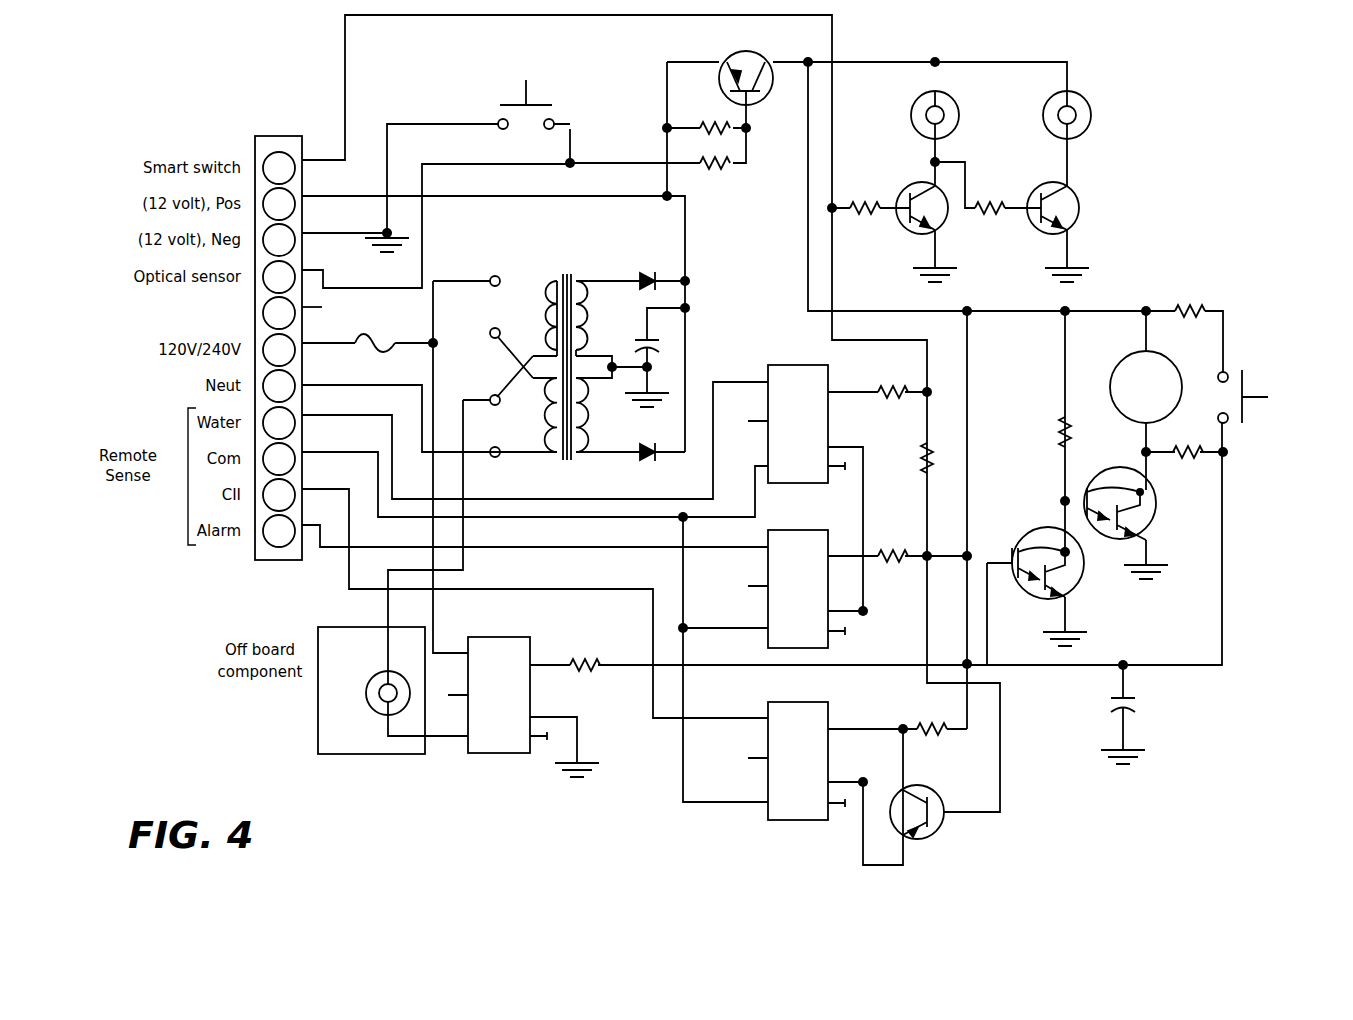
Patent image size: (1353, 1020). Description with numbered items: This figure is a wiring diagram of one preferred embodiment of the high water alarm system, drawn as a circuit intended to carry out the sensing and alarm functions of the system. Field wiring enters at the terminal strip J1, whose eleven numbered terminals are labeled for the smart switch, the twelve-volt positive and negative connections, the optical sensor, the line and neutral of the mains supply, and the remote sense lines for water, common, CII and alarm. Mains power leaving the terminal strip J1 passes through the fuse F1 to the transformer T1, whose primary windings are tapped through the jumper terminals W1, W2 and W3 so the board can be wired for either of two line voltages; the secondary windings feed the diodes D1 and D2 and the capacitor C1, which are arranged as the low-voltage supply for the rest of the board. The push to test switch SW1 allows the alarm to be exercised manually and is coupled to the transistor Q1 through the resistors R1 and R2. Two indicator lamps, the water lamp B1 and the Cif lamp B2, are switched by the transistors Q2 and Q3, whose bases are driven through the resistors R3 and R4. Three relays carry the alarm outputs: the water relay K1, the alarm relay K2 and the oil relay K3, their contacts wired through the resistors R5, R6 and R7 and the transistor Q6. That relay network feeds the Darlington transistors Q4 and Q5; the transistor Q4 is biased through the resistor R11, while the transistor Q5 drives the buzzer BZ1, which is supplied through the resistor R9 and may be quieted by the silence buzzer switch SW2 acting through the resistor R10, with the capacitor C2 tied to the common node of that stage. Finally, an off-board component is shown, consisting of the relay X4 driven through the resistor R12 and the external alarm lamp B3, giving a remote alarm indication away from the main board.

The terminal strip J1 is at (278, 312).
The fuse F1 is at (375, 334).
The push to test switch SW1 is at (519, 79).
The transistor Q1 is at (736, 66).
The resistor R1 is at (715, 115).
The resistor R2 is at (715, 175).
The water indicator lamp B1 is at (955, 105).
The Cif indicator lamp B2 is at (1080, 105).
The transistor Q2 is at (917, 196).
The transistor Q3 is at (1048, 196).
The resistor R3 is at (865, 196).
The resistor R4 is at (990, 196).
The transformer T1 is at (552, 357).
The jumper terminal W1 is at (486, 297).
The jumper terminal W2 is at (486, 353).
The jumper terminal W3 is at (486, 426).
The diode D1 is at (648, 269).
The diode D2 is at (647, 465).
The capacitor C1 is at (642, 334).
The water relay K1 is at (796, 414).
The alarm relay K2 is at (796, 579).
The oil relay K3 is at (796, 751).
The resistor R5 is at (893, 380).
The resistor R6 is at (910, 457).
The resistor R7 is at (912, 631).
The transistor Q6 is at (927, 803).
The darlington transistor Q4 is at (1035, 561).
The darlington transistor Q5 is at (1138, 503).
The resistor R11 is at (1047, 428).
The buzzer BZ1 is at (1132, 383).
The resistor R9 is at (1190, 299).
The resistor R10 is at (1186, 464).
The silence buzzer switch SW2 is at (1267, 407).
The capacitor C2 is at (1116, 693).
The off-board alarm relay X4 is at (497, 684).
The resistor R12 is at (583, 653).
The off-board alarm lamp B3 is at (371, 690).